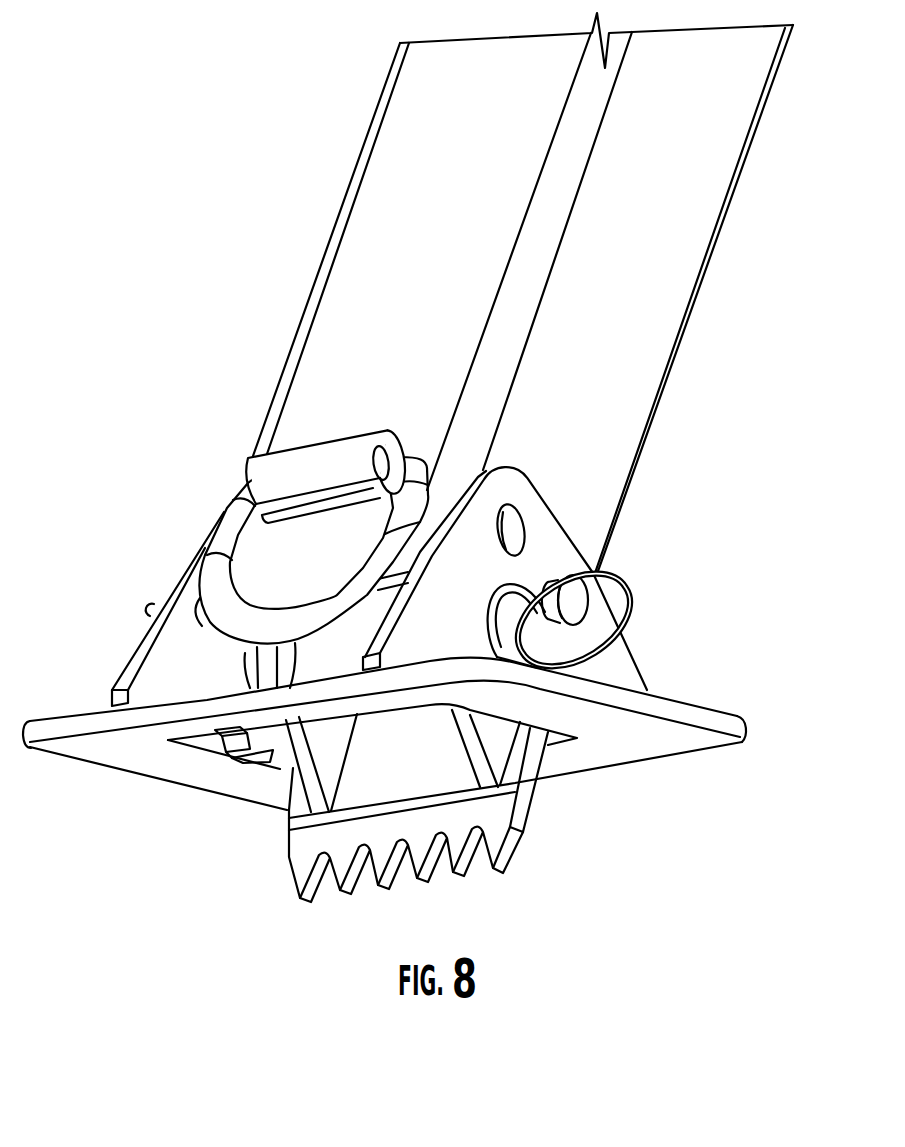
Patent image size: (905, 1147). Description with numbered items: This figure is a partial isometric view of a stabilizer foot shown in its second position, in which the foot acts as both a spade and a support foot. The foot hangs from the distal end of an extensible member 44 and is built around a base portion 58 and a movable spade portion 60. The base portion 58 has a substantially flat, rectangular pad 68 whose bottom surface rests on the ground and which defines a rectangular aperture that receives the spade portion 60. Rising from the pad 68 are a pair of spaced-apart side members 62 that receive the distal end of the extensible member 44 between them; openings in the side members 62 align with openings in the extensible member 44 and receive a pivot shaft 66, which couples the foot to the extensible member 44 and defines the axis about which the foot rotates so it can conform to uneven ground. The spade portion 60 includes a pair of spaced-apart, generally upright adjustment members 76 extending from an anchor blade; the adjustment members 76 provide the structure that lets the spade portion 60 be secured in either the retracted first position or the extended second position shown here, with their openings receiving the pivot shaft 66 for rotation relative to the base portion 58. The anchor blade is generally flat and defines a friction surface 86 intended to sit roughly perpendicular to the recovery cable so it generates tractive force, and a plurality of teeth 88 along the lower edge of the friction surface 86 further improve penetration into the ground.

The extensible member 44 is at (681, 280).
The base portion 58 is at (650, 635).
The spade portion 60 is at (532, 842).
The side members 62 is at (555, 543).
The pivot shaft 66 is at (580, 603).
The pad 68 is at (697, 740).
The adjustment members 76 is at (324, 751).
The friction surface 86 is at (371, 786).
The teeth 88 is at (470, 879).